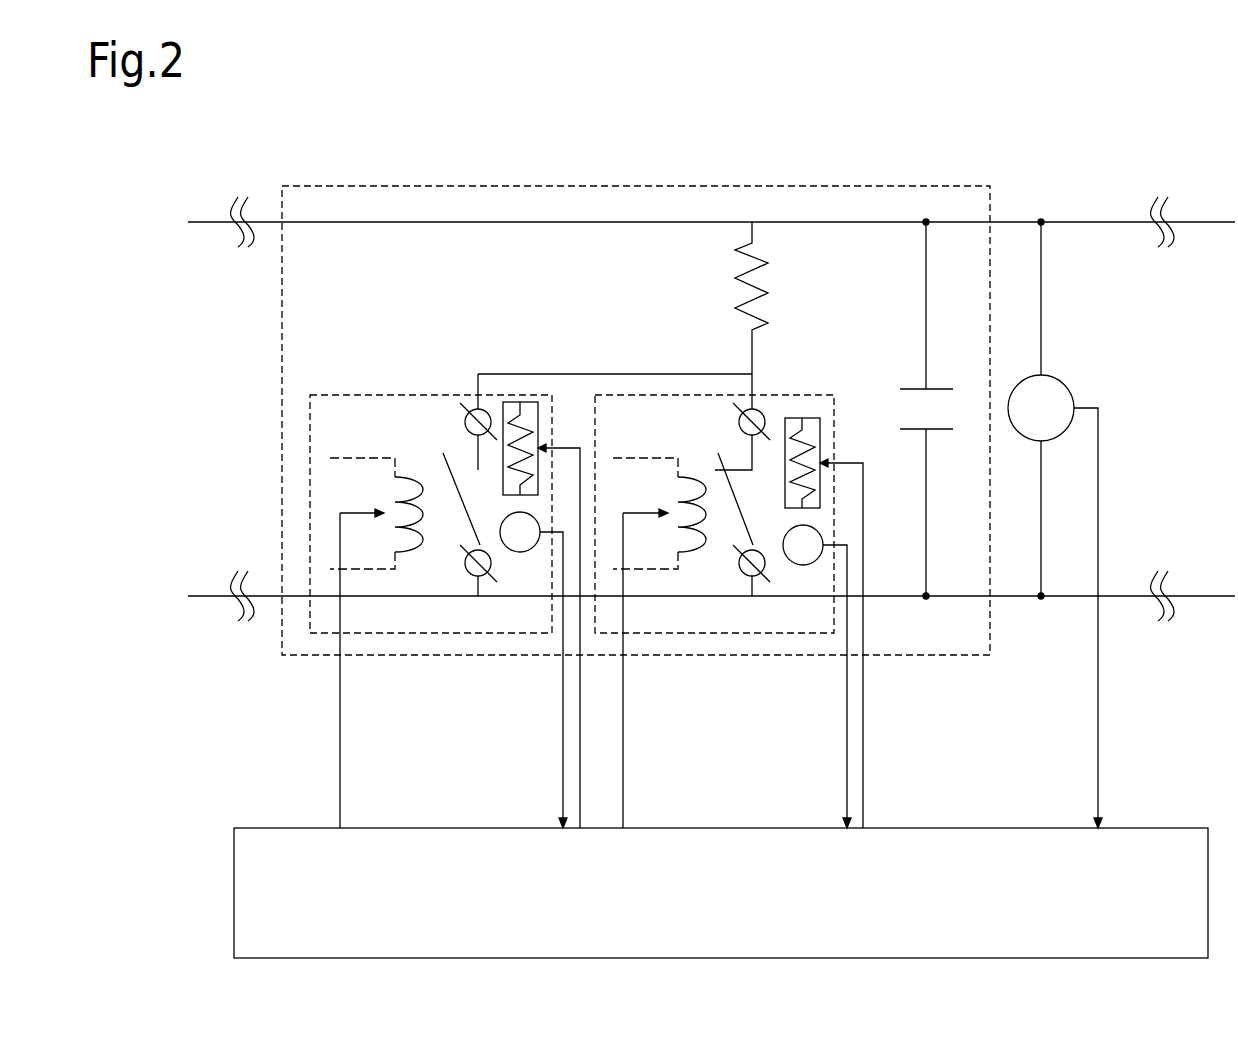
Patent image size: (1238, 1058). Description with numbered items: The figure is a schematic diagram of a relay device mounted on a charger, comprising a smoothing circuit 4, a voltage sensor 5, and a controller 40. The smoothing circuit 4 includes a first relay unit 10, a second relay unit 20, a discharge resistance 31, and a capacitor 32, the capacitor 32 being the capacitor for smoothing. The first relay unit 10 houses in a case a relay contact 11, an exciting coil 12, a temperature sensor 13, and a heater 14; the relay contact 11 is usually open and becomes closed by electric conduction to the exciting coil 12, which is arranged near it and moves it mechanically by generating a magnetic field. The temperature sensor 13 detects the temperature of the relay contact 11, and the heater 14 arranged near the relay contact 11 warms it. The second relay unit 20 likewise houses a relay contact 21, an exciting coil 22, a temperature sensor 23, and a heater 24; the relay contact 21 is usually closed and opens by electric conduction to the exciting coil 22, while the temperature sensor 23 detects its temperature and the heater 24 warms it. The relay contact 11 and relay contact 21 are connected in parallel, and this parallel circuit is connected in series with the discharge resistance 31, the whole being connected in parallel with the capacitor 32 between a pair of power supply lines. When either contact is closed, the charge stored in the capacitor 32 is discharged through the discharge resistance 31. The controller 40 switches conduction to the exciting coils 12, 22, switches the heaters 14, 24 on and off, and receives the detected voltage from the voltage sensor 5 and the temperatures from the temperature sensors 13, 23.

The smoothing circuit 4 is at (315, 186).
The voltage sensor 5 is at (1064, 385).
The first relay unit 10 is at (316, 634).
The relay contact 11 is at (445, 547).
The exciting coil 12 is at (405, 550).
The temperature sensor 13 is at (517, 553).
The heater 14 is at (518, 402).
The second relay unit 20 is at (640, 634).
The relay contact 21 is at (737, 527).
The exciting coil 22 is at (690, 550).
The temperature sensor 23 is at (802, 567).
The heater 24 is at (812, 418).
The discharge resistance 31 is at (735, 280).
The capacitor 32 is at (910, 389).
The controller 40 is at (721, 893).